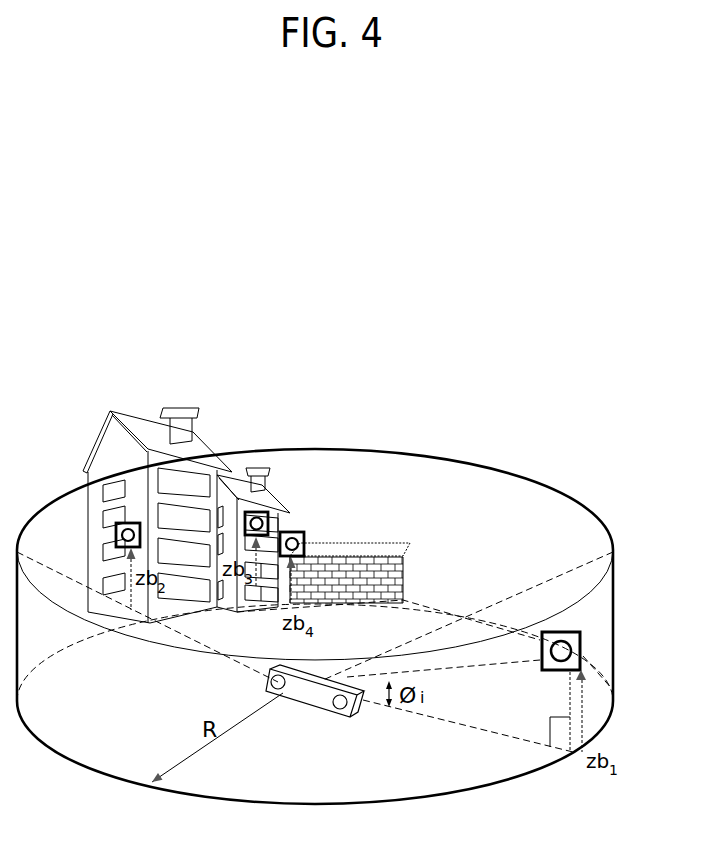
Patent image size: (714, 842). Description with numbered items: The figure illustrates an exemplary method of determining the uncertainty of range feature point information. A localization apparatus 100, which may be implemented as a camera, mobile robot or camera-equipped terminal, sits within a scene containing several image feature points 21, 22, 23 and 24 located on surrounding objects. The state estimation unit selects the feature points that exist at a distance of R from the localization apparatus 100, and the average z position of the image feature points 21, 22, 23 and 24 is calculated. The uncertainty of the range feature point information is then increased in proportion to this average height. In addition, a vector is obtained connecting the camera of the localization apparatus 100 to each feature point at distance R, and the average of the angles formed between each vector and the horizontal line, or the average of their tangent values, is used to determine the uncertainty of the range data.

The image feature point 21 is at (582, 645).
The image feature point 22 is at (114, 535).
The image feature point 23 is at (272, 512).
The image feature point 24 is at (298, 532).
The localization apparatus 100 is at (300, 705).